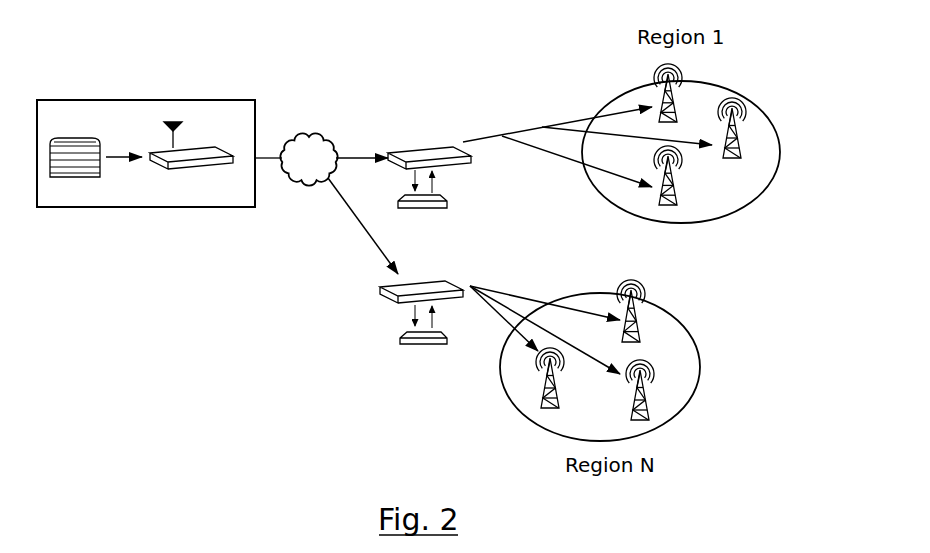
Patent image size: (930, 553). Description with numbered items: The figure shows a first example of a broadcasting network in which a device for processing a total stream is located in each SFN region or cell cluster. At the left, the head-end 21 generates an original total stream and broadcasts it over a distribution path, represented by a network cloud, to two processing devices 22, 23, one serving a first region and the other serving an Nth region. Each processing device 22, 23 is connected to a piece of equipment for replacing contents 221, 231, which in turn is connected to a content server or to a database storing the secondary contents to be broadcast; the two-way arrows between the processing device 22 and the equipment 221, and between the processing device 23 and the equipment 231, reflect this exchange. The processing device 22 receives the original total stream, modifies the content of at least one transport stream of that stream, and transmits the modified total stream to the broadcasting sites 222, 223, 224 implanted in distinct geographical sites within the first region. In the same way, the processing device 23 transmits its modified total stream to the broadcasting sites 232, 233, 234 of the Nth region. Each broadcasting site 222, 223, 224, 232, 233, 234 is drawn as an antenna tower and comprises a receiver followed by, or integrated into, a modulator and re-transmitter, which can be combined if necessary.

The head-end 21 is at (182, 198).
The processing device 22 is at (417, 147).
The piece of equipment for replacing contents 221 is at (448, 204).
The broadcasting site 222 is at (694, 87).
The broadcasting site 223 is at (748, 143).
The broadcasting site 224 is at (680, 200).
The processing device 23 is at (448, 282).
The piece of equipment for replacing contents 231 is at (408, 345).
The broadcasting site 232 is at (645, 320).
The broadcasting site 233 is at (652, 408).
The broadcasting site 234 is at (533, 397).